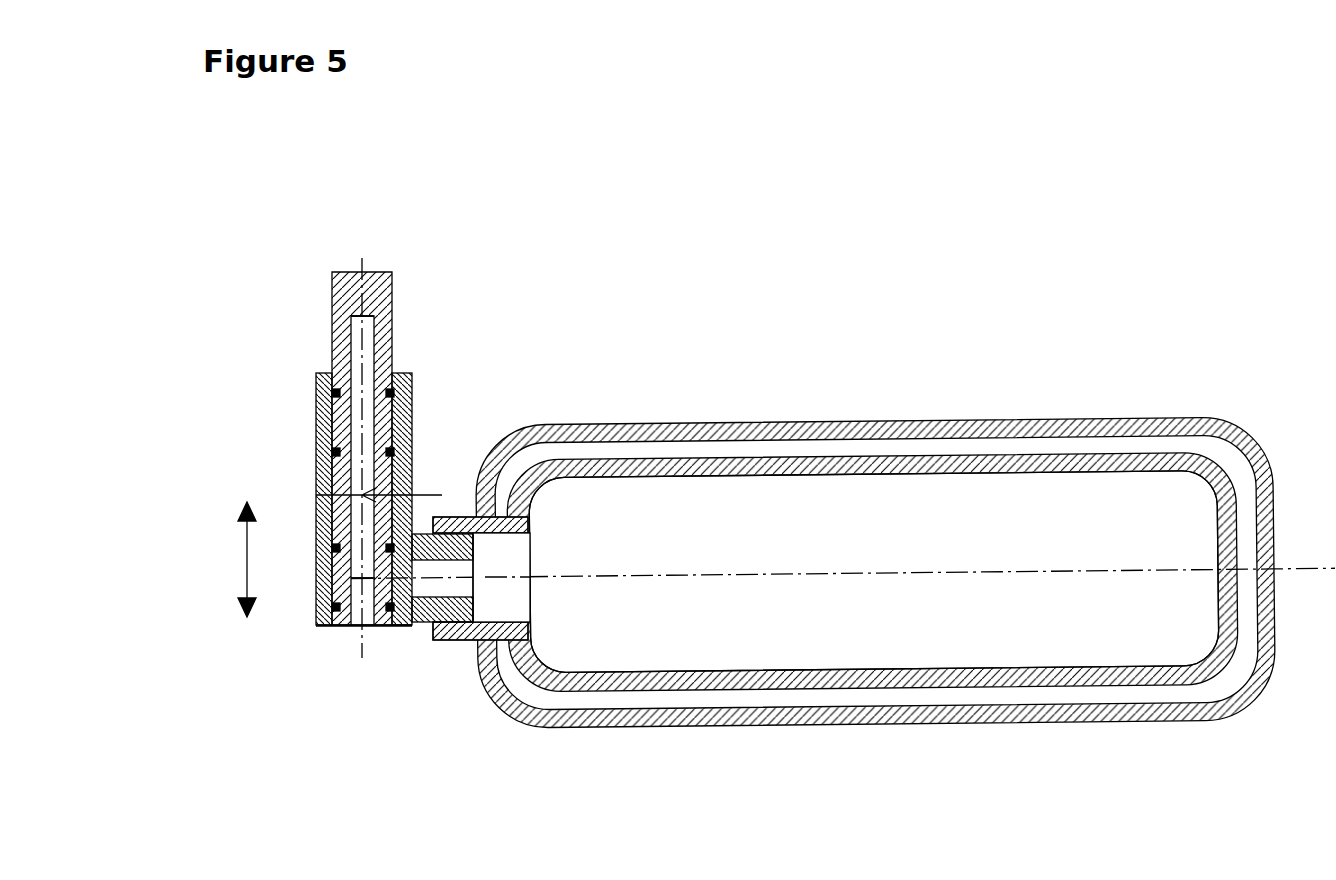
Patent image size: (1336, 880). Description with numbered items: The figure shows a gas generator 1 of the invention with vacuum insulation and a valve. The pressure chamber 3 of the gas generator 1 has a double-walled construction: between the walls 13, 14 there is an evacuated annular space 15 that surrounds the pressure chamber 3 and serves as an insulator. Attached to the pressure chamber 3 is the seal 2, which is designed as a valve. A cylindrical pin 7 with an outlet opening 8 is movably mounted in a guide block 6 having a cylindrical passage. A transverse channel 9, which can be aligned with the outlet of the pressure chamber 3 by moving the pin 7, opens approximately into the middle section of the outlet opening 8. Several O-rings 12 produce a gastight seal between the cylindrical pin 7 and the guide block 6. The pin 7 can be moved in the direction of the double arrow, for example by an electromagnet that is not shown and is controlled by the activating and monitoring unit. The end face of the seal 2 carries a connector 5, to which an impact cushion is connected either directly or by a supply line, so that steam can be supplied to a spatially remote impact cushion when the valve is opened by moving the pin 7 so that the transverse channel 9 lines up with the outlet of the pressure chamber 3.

The gas generator 1 is at (508, 754).
The seal 2 is at (299, 659).
The pressure chamber 3 is at (842, 544).
The connector 5 is at (398, 627).
The guide block 6 is at (412, 371).
The cylindrical pin 7 is at (392, 295).
The outlet opening 8 is at (362, 340).
The transverse channel 9 is at (413, 468).
The O-rings 12 is at (317, 603).
The wall 13 is at (757, 481).
The wall 14 is at (637, 423).
The evacuated annular space 15 is at (993, 447).